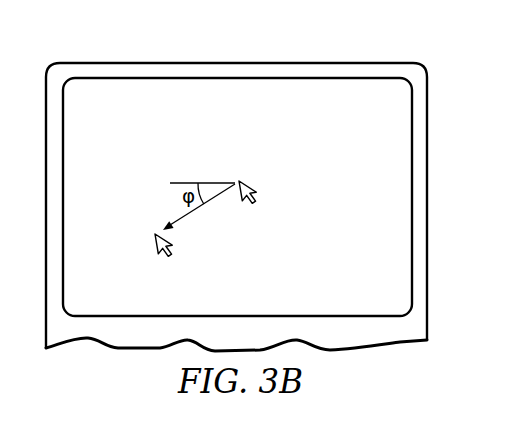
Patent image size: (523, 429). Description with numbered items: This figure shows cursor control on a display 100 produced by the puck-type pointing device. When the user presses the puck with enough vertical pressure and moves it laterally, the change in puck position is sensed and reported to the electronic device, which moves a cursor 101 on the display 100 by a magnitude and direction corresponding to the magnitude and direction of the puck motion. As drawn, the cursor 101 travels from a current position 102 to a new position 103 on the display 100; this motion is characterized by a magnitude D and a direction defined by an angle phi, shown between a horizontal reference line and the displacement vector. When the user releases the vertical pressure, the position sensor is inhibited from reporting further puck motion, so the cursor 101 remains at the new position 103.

The display 100 is at (235, 98).
The cursor 101 is at (258, 194).
The current position 102 is at (243, 166).
The new position 103 is at (156, 214).